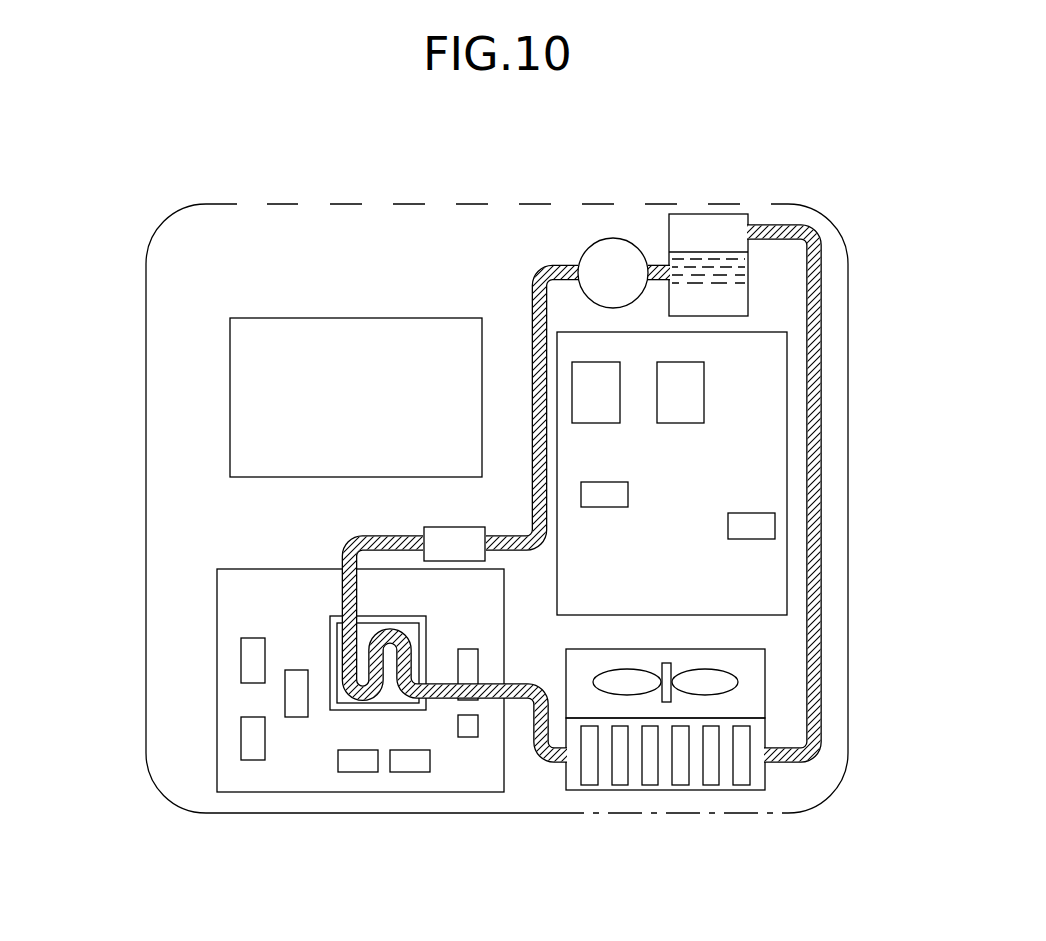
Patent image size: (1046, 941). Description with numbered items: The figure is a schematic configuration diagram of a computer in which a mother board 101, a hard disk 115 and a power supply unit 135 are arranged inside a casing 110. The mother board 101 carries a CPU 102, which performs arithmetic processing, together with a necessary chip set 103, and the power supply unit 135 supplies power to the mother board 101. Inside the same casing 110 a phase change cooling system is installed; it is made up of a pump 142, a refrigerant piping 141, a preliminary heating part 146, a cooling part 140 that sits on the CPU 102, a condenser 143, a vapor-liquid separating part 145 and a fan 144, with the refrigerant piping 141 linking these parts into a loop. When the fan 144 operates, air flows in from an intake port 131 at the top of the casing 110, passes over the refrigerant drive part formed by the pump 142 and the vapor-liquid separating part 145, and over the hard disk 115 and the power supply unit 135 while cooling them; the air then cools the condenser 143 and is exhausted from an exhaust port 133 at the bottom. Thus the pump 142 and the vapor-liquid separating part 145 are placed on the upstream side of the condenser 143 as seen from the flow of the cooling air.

The mother board 101 is at (217, 603).
The CPU 102 is at (331, 636).
The chip set 103 is at (241, 661).
The casing 110 is at (848, 507).
The hard disk 115 is at (357, 318).
The intake port 131 is at (467, 205).
The exhaust port 133 is at (630, 813).
The power supply unit 135 is at (788, 437).
The cooling part 140 is at (340, 711).
The refrigerant piping 141 is at (821, 600).
The pump 142 is at (617, 238).
The condenser 143 is at (722, 793).
The fan 144 is at (765, 676).
The vapor-liquid separating part 145 is at (712, 214).
The preliminary heating part 146 is at (424, 531).